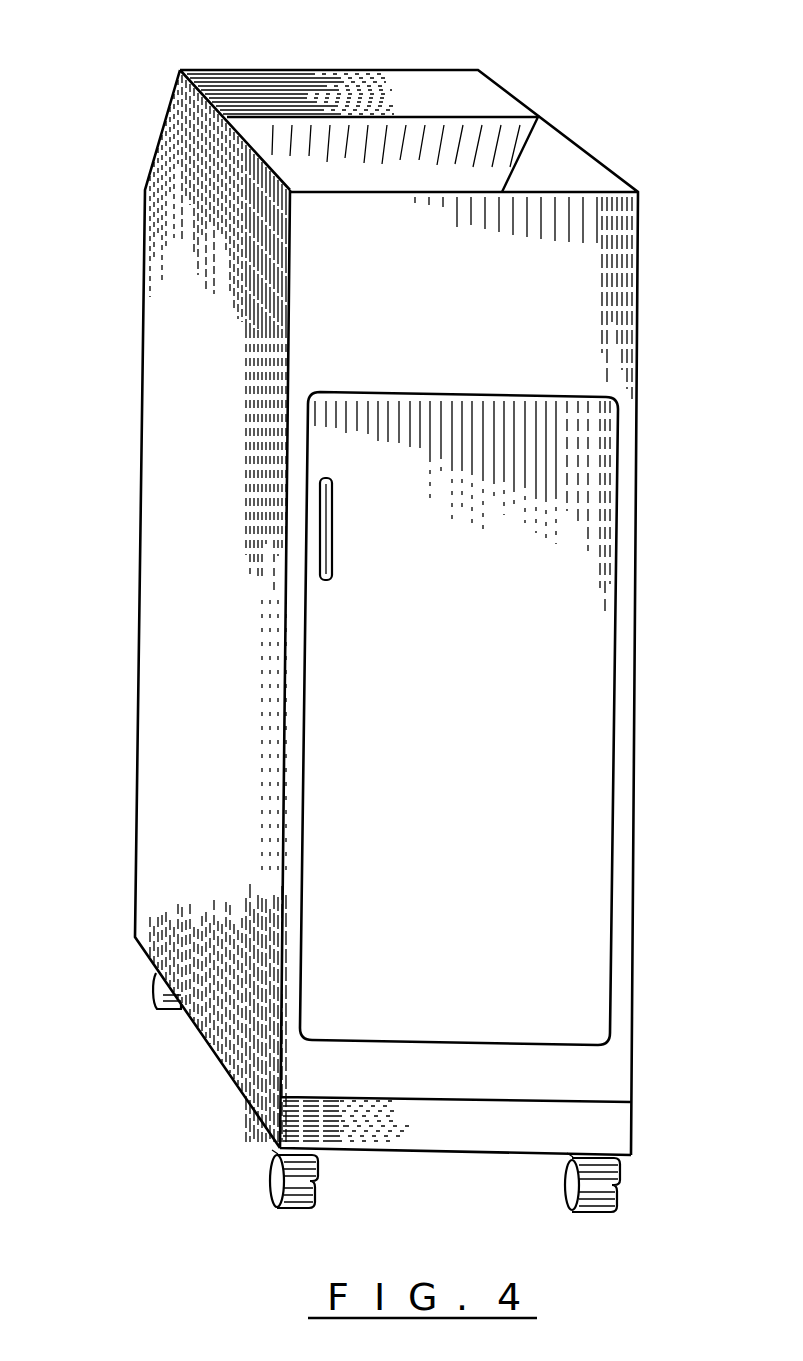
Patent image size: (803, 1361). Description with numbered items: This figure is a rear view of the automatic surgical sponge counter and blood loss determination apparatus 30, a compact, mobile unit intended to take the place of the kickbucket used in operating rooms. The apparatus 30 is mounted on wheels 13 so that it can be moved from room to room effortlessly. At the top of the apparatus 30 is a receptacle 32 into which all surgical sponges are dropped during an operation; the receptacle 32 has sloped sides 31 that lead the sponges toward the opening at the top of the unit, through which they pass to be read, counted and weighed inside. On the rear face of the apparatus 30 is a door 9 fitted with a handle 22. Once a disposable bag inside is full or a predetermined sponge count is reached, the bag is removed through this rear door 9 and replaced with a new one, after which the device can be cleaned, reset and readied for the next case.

The door 9 is at (580, 863).
The wheels 13 is at (313, 1195).
The handle for door 22 is at (332, 537).
The automatic surgical sponge counter and blood loss determination apparatus 30 is at (129, 584).
The sloped sides of receptacle 31 is at (255, 132).
The receptacle 32 is at (589, 84).